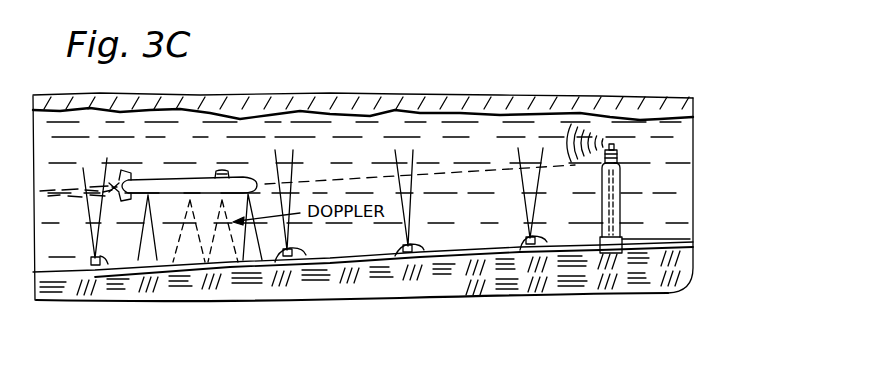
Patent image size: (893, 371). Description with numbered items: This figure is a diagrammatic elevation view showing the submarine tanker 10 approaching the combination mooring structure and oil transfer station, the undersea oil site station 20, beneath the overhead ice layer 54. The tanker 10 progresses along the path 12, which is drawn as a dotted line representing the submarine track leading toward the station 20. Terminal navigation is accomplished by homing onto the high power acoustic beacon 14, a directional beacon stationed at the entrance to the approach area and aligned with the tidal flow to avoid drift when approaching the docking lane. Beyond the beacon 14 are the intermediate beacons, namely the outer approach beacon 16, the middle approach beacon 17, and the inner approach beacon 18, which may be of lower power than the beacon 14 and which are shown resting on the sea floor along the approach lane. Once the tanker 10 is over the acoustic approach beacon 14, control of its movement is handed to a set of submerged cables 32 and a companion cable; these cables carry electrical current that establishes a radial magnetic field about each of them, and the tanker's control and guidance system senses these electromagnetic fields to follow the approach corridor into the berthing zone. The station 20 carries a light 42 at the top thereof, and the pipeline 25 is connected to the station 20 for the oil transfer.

The submarine tanker 10 is at (205, 179).
The path 12 is at (368, 176).
The high power acoustic beacon 14 is at (92, 256).
The outer approach beacon 16 is at (305, 252).
The middle approach beacon 17 is at (423, 248).
The inner approach beacon 18 is at (546, 240).
The undersea oil site station 20 is at (626, 188).
The pipeline 25 is at (673, 238).
The submerged cable 32 is at (243, 263).
The light 42 is at (615, 142).
The overhead ice layer 54 is at (446, 101).